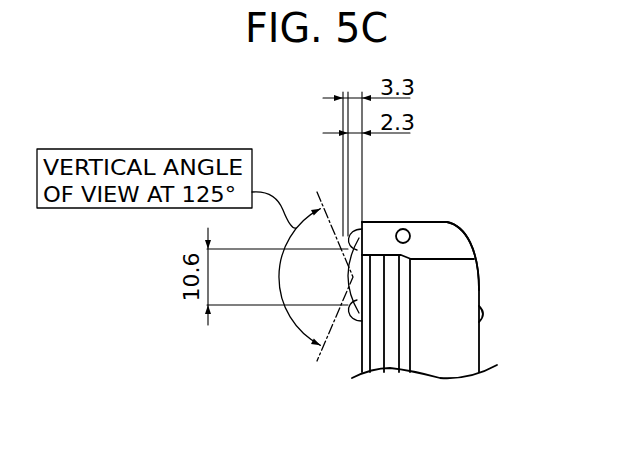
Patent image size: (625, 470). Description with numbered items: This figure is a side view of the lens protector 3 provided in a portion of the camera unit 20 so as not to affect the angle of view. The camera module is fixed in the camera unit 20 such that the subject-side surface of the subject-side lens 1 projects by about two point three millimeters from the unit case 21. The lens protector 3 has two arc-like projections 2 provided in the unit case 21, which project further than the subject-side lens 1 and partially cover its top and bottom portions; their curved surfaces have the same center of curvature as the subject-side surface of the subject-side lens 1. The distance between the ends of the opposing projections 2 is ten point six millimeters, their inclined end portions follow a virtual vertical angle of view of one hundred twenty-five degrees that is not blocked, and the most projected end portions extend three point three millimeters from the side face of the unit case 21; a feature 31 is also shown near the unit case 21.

The subject-side lens 1 is at (350, 278).
The projections 2 is at (352, 230).
The lens protector 3 is at (333, 357).
The camera unit 20 is at (413, 206).
The unit case 21 is at (463, 229).
The mounting hole 31 is at (429, 257).